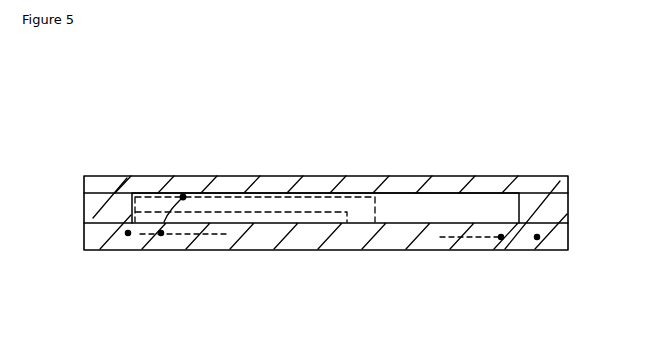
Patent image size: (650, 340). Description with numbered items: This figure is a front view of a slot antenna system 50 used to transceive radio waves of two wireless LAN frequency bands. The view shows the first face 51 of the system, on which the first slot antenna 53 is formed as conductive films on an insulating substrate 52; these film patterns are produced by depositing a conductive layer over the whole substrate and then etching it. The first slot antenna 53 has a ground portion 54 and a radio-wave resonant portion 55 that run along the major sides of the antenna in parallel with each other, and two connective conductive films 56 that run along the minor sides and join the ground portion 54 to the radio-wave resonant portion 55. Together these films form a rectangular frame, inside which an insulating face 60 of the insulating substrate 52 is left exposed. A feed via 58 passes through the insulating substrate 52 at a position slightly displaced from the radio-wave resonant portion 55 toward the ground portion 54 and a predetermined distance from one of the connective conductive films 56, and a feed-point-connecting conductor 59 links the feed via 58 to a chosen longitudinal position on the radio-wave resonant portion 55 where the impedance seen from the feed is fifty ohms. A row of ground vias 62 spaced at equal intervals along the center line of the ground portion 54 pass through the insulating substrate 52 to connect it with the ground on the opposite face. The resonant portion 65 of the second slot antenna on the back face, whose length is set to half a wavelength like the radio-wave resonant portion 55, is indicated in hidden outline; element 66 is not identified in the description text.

The slot antenna system 50 is at (345, 102).
The first face 51 is at (513, 172).
The insulating substrate 52 is at (467, 215).
The first slot antenna 53 is at (83, 225).
The ground portion 54 is at (316, 236).
The radio-wave resonant portion 55 is at (381, 178).
The connective conductive films 56 is at (111, 222).
The feed via 58 is at (183, 197).
The feed-point-connecting conductor 59 is at (164, 236).
The insulating face 60 is at (406, 216).
The ground vias 62 is at (161, 235).
The radio-wave resonant portion 65 is at (257, 193).
The via 66 is at (129, 228).